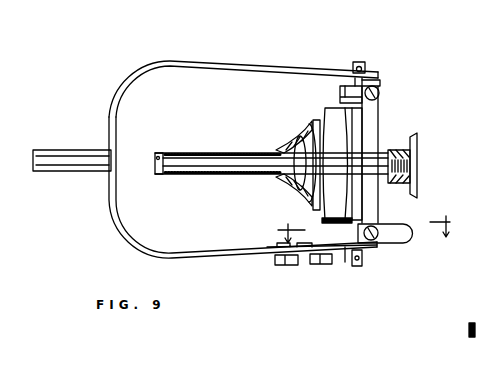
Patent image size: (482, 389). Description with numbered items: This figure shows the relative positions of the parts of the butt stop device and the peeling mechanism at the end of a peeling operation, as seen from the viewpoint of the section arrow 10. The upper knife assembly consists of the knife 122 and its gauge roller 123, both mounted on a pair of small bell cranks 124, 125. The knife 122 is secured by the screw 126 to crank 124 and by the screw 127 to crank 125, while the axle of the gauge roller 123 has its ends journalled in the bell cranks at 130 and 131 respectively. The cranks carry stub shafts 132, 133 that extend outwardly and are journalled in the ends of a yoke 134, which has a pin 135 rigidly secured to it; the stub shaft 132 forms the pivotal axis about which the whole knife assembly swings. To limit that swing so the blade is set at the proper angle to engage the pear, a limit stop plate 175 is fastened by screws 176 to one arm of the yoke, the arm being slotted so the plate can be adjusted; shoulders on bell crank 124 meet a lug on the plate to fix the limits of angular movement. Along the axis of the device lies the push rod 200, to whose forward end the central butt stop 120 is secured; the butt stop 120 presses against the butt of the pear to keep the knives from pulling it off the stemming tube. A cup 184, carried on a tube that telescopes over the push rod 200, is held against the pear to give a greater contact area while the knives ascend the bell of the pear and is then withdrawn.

The section line 10 is at (367, 226).
The central butt stop 120 is at (418, 146).
The knife 122 is at (380, 118).
The gauge roller 123 is at (322, 111).
The bell crank 124 is at (340, 99).
The bell crank 125 is at (352, 243).
The screw 126 is at (379, 92).
The screw 127 is at (374, 247).
The journal 130 is at (348, 86).
The journal 131 is at (345, 262).
The stub shaft 132 is at (362, 63).
The stub shaft 133 is at (356, 266).
The yoke 134 is at (259, 73).
The pin 135 is at (97, 140).
The plate 175 is at (290, 243).
The screws 176 is at (318, 263).
The cup 184 is at (297, 199).
The push rod 200 is at (244, 153).